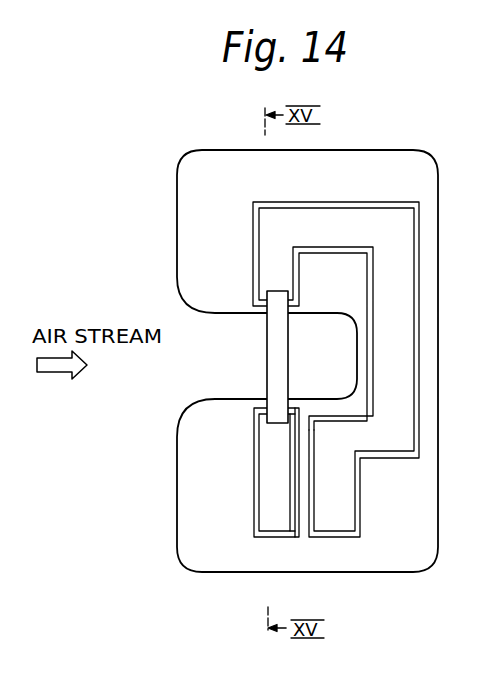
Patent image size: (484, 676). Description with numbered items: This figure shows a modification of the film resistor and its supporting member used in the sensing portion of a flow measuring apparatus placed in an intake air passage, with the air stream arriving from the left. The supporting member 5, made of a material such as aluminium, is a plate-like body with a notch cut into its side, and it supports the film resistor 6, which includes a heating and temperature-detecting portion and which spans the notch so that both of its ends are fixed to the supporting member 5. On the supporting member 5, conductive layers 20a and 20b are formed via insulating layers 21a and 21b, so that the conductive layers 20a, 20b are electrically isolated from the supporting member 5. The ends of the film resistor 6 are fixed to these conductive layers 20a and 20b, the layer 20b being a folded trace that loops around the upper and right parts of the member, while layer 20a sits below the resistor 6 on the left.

The supporting member 5 is at (440, 492).
The film resistor 6 is at (267, 355).
The conductive layer 20a is at (276, 515).
The conductive layer 20b is at (337, 480).
The insulating layer 21a is at (290, 538).
The insulating layer 21b is at (340, 538).